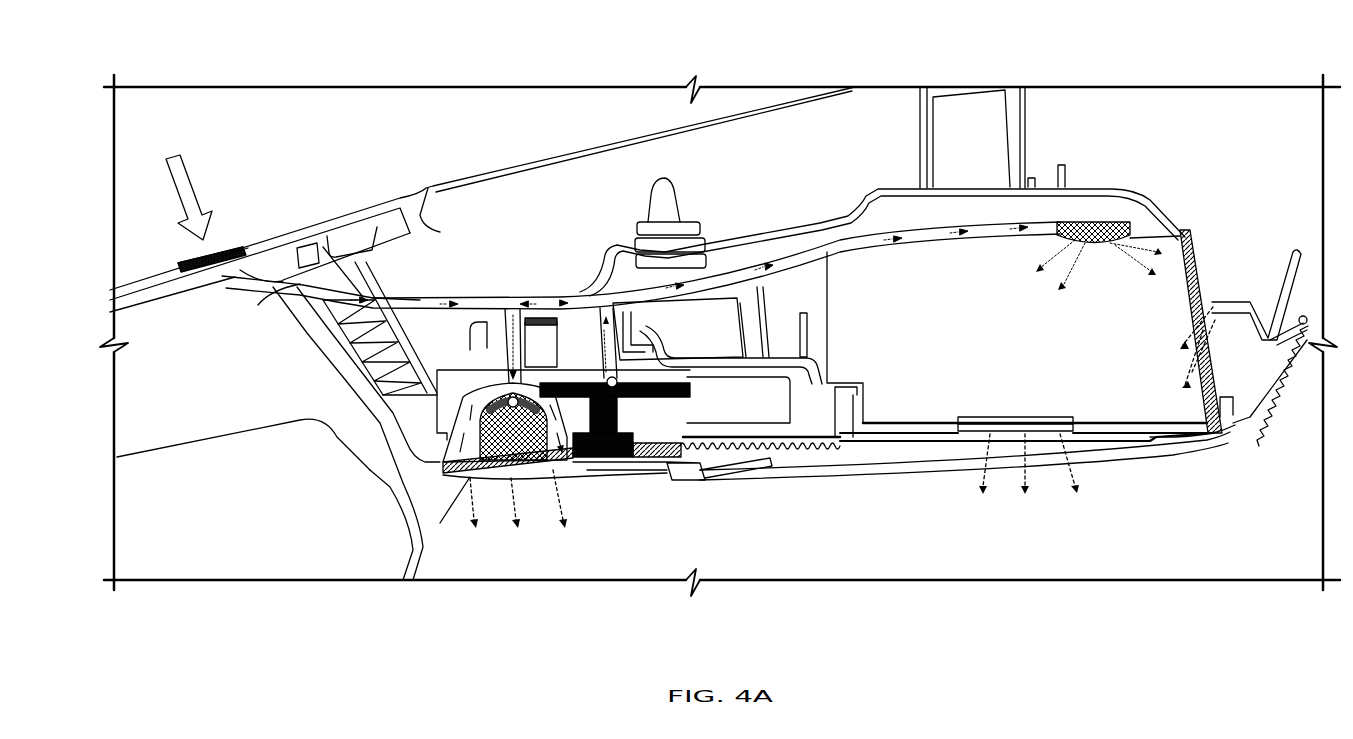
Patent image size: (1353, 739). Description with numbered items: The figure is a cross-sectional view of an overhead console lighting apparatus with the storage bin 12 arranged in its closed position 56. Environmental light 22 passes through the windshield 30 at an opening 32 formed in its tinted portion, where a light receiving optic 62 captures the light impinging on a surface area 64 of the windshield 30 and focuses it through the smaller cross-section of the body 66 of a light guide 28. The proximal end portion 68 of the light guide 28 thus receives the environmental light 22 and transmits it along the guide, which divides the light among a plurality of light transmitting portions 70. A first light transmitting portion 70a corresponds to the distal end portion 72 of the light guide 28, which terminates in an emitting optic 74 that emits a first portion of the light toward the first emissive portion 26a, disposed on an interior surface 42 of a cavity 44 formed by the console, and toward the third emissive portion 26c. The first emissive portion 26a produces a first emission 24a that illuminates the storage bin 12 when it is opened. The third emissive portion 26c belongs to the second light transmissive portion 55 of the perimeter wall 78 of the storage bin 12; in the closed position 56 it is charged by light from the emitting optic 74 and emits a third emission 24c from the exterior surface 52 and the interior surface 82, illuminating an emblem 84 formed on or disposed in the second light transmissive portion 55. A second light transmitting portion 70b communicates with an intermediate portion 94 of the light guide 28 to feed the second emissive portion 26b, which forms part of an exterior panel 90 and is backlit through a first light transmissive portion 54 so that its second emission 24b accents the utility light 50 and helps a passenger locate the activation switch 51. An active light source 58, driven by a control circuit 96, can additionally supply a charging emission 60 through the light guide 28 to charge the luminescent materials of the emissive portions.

The storage bin 12 is at (1097, 410).
The environmental light 22 is at (187, 183).
The first emission 24a is at (1213, 350).
The second emission 24b is at (558, 520).
The third emission 24c is at (1063, 460).
The first emissive portion 26a is at (1200, 267).
The second emissive portion 26b is at (443, 473).
The third emissive portion 26c is at (977, 432).
The light guide 28 is at (410, 298).
The windshield 30 is at (153, 282).
The opening 32 is at (227, 248).
The interior surface 42 is at (1213, 377).
The cavity 44 is at (1180, 437).
The utility light 50 is at (487, 397).
The activation switch 51 is at (618, 458).
The exterior surface 52 is at (865, 465).
The first light transmissive portion 54 is at (455, 478).
The second light transmissive portion 55 is at (993, 432).
The closed position 56 is at (835, 530).
The active light source 58 is at (618, 380).
The charging emission 60 is at (610, 333).
The light receiving optic 62 is at (187, 268).
The surface area 64 is at (210, 255).
The body 66 is at (290, 280).
The proximal end portion 68 is at (243, 305).
The light transmitting portions 70 is at (940, 233).
The first light transmitting portion 70a is at (645, 324).
The second light transmitting portion 70b is at (510, 357).
The distal end portion 72 is at (1040, 207).
The emitting optic 74 is at (1120, 227).
The perimeter wall 78 is at (917, 441).
The interior surface 82 is at (977, 417).
The emblem 84 is at (1007, 447).
The exterior panel 90 is at (578, 488).
The intermediate portion 94 is at (507, 280).
The control circuit 96 is at (685, 390).